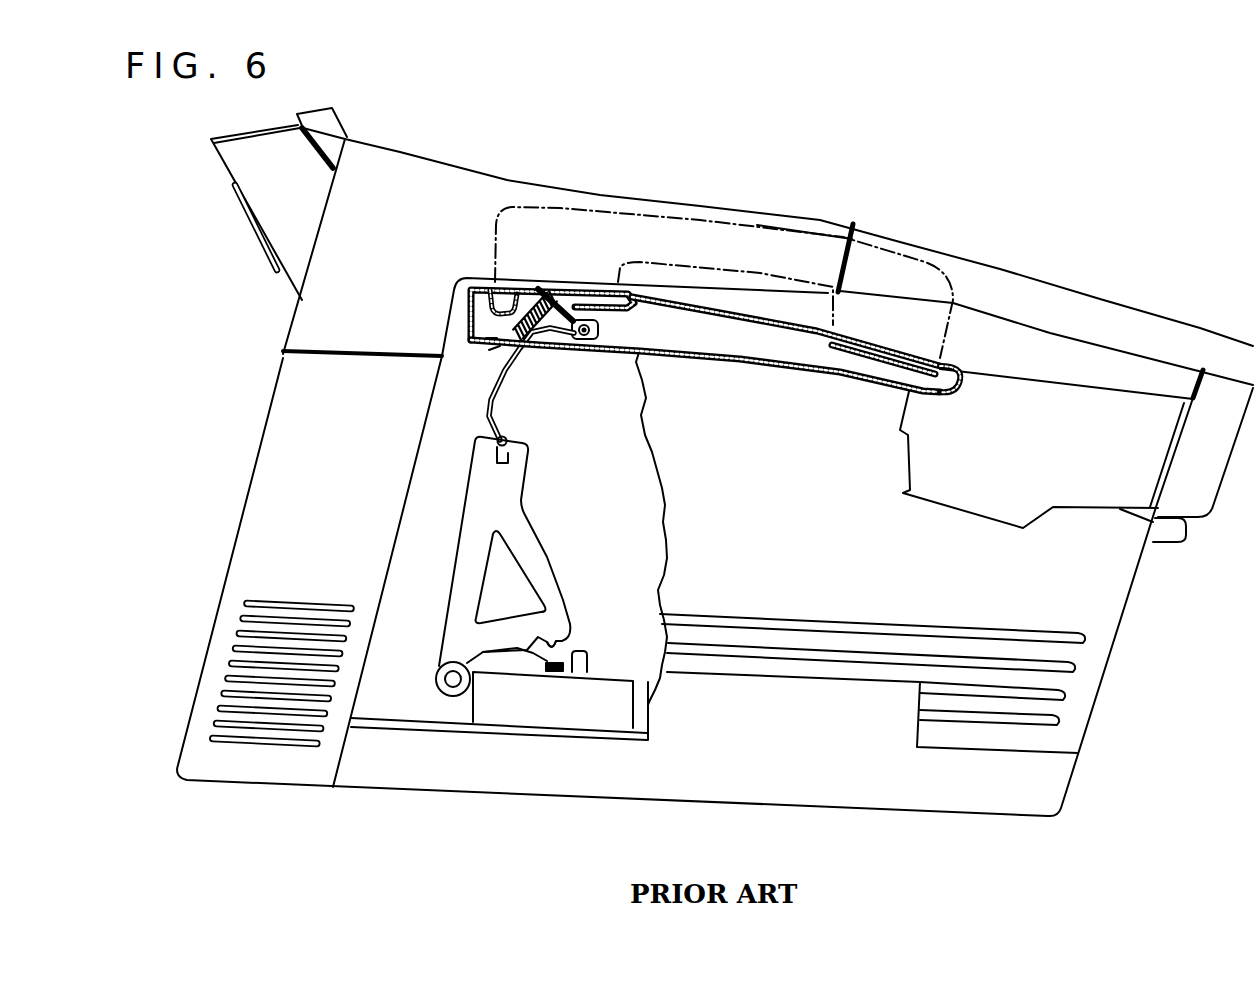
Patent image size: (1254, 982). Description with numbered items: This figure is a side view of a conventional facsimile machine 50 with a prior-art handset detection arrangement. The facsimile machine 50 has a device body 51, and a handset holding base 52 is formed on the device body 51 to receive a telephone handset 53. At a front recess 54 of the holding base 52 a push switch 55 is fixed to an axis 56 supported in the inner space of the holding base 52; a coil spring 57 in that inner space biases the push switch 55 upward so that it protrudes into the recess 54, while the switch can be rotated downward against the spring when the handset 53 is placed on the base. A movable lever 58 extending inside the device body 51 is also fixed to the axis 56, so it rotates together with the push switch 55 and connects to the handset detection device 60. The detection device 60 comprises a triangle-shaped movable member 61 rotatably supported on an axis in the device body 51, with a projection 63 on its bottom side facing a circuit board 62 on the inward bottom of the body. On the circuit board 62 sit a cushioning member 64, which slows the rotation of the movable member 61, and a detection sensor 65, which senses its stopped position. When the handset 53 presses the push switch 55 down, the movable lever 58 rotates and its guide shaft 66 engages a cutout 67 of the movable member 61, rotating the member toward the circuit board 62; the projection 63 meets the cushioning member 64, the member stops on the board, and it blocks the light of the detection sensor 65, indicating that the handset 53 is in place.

The facsimile machine 50 is at (572, 162).
The device body 51 is at (362, 173).
The handset holding base 52 is at (760, 360).
The telephone handset 53 is at (760, 222).
The front recess 54 is at (513, 280).
The push switch 55 is at (557, 297).
The axis 56 is at (588, 339).
The coil spring 57 is at (505, 341).
The movable lever 58 is at (512, 377).
The handset detection device 60 is at (192, 421).
The movable member 61 is at (495, 480).
The circuit board 62 is at (520, 662).
The projection 63 is at (552, 634).
The cushioning member 64 is at (547, 663).
The detection sensor 65 is at (570, 670).
The guide shaft 66 is at (510, 440).
The cutout 67 is at (522, 453).